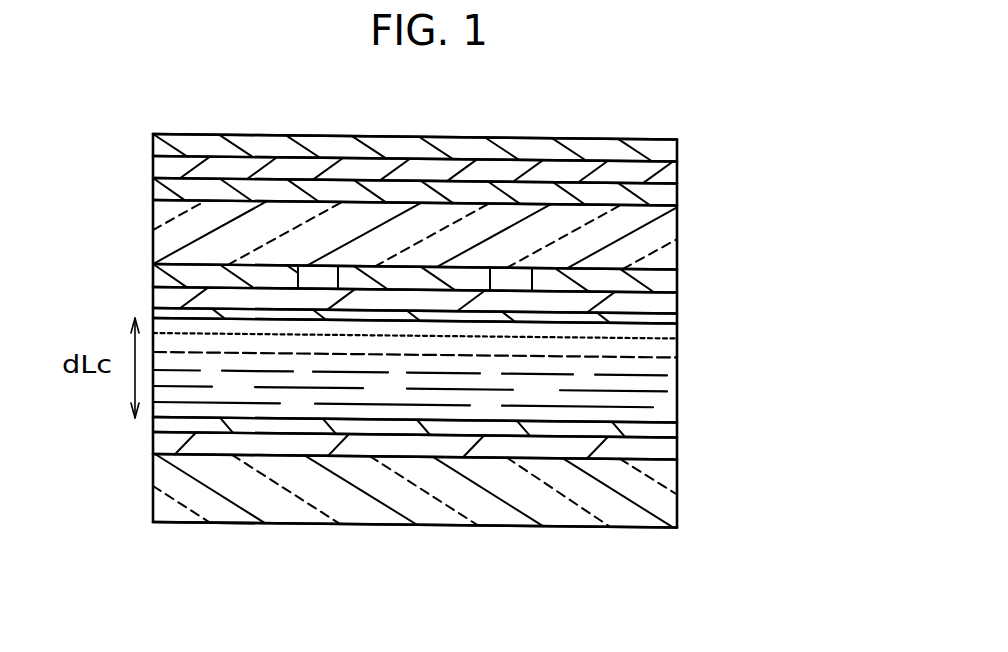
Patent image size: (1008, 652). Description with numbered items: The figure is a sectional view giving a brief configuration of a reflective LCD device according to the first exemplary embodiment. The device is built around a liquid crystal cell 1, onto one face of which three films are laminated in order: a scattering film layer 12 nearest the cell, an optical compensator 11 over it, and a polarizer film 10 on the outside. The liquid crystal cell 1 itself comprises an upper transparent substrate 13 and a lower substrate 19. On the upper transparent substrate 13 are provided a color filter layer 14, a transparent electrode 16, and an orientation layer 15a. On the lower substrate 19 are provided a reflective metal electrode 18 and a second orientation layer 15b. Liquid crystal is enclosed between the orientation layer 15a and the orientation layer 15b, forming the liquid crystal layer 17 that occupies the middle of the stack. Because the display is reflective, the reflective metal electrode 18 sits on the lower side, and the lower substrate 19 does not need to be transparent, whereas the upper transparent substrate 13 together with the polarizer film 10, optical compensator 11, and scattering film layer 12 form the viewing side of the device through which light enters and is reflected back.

The liquid crystal cell 1 is at (852, 218).
The polarizer film 10 is at (668, 153).
The optical compensator 11 is at (668, 175).
The scattering film layer 12 is at (668, 190).
The upper transparent substrate 13 is at (653, 231).
The color filter layer 14 is at (668, 285).
The transparent electrode 16 is at (668, 306).
The orientation layer 15a is at (668, 319).
The liquid crystal layer 17 is at (658, 398).
The orientation layer 15b is at (668, 432).
The reflective metal electrode 18 is at (663, 450).
The lower substrate 19 is at (668, 510).